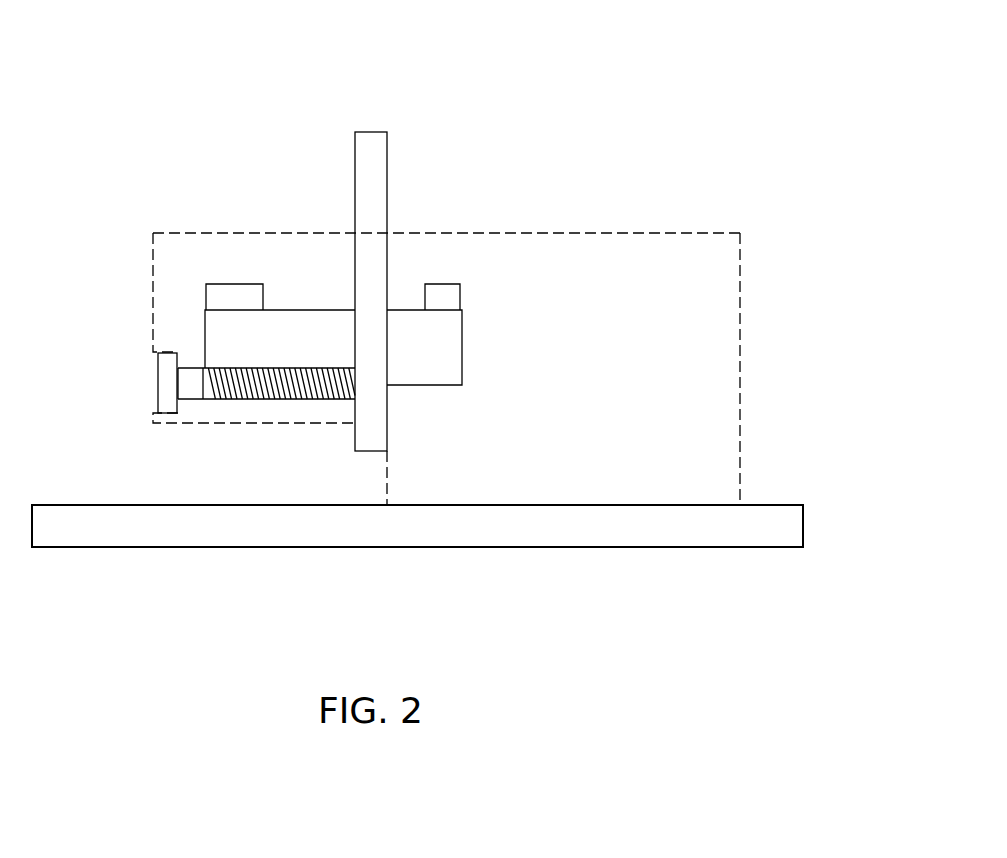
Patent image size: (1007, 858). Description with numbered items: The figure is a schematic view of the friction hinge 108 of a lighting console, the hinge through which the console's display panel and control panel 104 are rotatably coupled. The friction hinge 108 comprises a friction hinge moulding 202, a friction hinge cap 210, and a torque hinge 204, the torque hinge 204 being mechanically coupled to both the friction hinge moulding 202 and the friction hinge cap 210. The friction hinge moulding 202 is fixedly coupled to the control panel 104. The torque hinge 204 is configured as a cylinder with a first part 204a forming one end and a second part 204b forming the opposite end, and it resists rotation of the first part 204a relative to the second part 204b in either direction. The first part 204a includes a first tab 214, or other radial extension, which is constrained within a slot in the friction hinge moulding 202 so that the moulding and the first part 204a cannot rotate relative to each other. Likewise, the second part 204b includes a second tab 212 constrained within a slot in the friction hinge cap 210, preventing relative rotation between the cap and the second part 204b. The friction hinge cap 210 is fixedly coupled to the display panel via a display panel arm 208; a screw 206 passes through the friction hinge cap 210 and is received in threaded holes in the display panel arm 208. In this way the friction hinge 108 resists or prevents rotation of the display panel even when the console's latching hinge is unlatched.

The friction hinge 108 is at (197, 147).
The control panel 104 is at (790, 523).
The friction hinge moulding 202 is at (727, 310).
The torque hinge 204 is at (478, 344).
The first part 204a is at (440, 323).
The second part 204b is at (312, 327).
The screw 206 is at (167, 387).
The display panel arm 208 is at (370, 158).
The friction hinge cap 210 is at (152, 262).
The second tab 212 is at (213, 297).
The first tab 214 is at (448, 292).